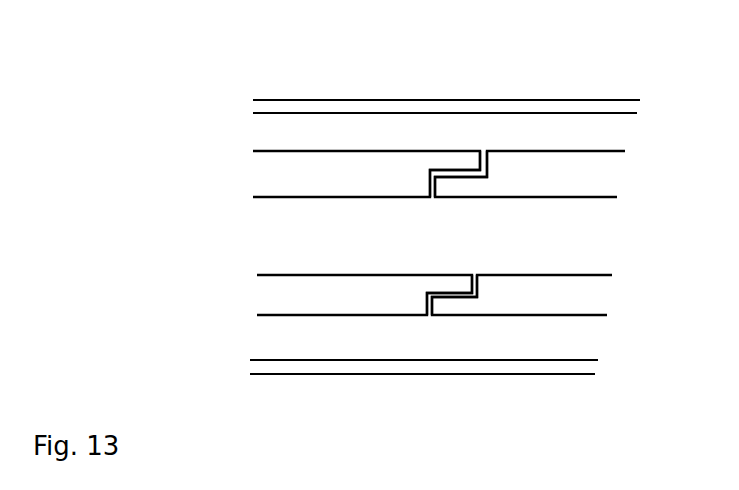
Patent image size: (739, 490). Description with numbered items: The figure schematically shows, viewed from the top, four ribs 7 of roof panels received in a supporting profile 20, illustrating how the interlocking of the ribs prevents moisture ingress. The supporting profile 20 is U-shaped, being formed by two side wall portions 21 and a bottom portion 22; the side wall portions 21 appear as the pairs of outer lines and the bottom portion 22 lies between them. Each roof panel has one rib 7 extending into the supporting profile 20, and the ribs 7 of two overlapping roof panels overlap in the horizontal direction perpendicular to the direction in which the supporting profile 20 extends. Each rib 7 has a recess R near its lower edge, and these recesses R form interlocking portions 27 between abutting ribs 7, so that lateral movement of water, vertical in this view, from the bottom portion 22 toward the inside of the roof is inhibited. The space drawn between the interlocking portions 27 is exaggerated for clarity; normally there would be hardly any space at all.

The rib 7 is at (318, 170).
The supporting profile 20 is at (240, 230).
The side wall portion 21 is at (265, 108).
The bottom portion 22 is at (390, 248).
The interlocking portion 27 is at (470, 187).
The recess R is at (505, 208).